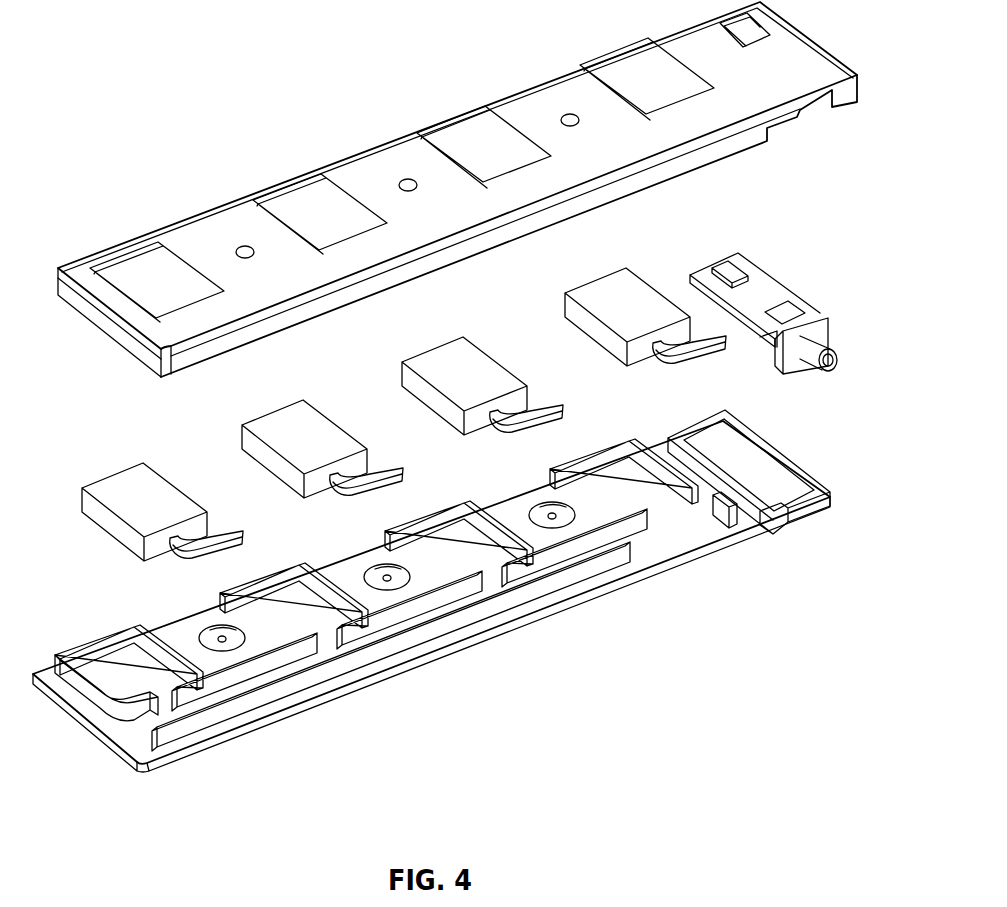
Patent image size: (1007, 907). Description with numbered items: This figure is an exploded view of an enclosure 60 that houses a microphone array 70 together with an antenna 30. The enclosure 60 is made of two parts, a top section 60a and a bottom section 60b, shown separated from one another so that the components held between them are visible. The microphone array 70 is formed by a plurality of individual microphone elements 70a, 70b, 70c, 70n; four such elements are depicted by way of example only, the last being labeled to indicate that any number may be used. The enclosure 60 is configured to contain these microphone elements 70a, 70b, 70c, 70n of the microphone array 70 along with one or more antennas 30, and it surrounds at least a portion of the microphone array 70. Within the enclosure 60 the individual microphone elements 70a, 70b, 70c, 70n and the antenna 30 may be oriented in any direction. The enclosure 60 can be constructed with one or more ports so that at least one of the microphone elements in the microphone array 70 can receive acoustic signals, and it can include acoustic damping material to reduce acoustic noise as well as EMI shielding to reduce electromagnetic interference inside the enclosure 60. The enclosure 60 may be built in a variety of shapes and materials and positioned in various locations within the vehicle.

The enclosure 60 is at (368, 122).
The top section 60a is at (181, 218).
The bottom section 60b is at (117, 624).
The microphone array 70 is at (139, 428).
The microphone element 70a is at (115, 475).
The microphone element 70b is at (272, 410).
The microphone element 70c is at (440, 344).
The microphone element 70n is at (596, 284).
The antenna 30 is at (832, 335).